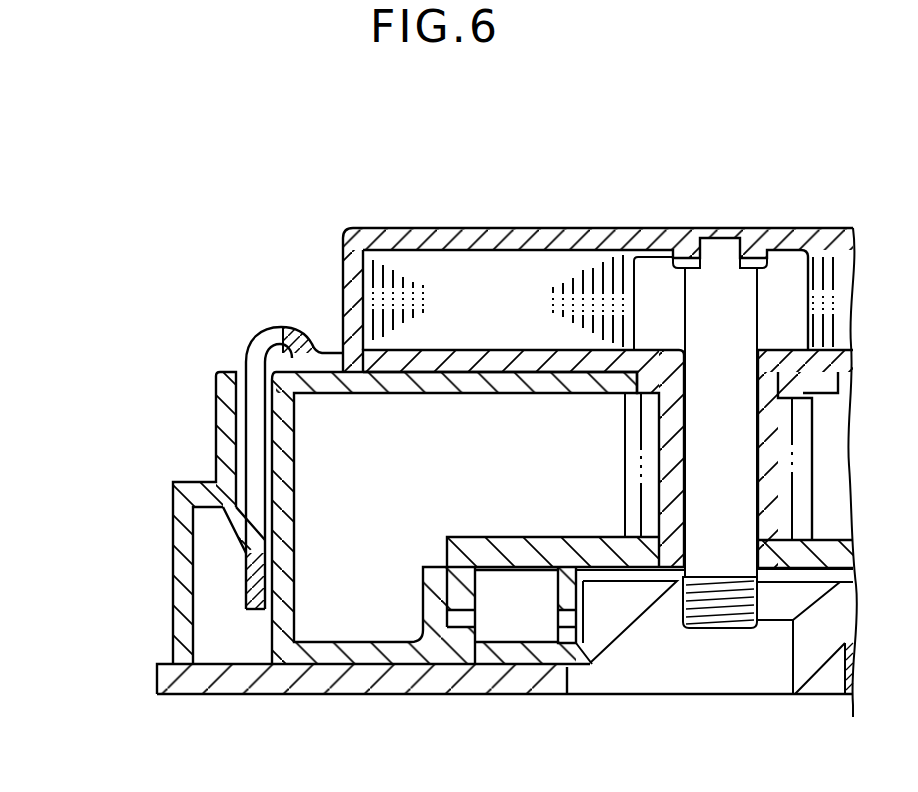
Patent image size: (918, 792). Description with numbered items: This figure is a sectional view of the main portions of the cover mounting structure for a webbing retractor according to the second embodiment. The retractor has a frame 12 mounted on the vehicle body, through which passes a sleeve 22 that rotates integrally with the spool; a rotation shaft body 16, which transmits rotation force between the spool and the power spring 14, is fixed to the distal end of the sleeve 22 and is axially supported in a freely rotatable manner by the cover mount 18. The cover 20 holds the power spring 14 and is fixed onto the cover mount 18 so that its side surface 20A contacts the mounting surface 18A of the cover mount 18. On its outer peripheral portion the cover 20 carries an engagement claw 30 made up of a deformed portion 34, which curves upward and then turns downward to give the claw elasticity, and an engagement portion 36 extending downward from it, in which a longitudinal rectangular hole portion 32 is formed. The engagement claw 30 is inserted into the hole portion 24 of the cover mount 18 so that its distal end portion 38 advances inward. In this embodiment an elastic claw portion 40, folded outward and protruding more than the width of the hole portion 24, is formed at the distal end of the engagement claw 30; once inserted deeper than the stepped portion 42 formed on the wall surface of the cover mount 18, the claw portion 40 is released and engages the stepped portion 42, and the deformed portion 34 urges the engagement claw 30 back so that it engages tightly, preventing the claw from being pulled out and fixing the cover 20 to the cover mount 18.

The frame 12 is at (363, 690).
The power spring 14 is at (573, 280).
The rotation shaft body 16 is at (723, 256).
The cover mount 18 is at (467, 472).
The mounting surface 18A is at (472, 368).
The cover 20 is at (434, 229).
The side surface 20A is at (342, 257).
The sleeve 22 is at (622, 672).
The hole portion 24 is at (262, 392).
The engagement claw 30 is at (268, 326).
The hole portion 32 is at (265, 432).
The deformed portion 34 is at (304, 332).
The engagement portion 36 is at (257, 430).
The distal end portion 38 is at (260, 603).
The claw portion 40 is at (282, 505).
The stepped portion 42 is at (210, 511).